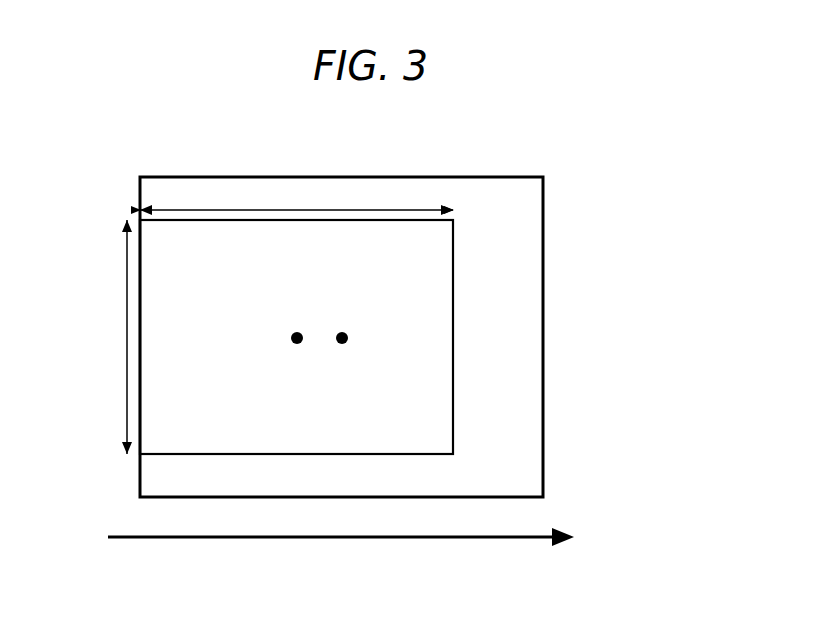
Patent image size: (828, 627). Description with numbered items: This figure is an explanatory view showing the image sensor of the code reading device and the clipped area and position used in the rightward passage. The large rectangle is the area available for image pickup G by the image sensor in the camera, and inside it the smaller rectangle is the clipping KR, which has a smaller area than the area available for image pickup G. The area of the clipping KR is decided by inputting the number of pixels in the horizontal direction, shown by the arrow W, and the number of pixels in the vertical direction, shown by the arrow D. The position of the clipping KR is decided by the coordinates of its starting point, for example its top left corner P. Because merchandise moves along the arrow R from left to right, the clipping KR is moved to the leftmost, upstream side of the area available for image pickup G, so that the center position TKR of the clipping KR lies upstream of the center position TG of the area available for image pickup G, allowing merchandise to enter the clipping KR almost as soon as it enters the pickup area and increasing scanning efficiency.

The area available for image pickup G is at (465, 177).
The clipping KR is at (313, 220).
The top left corner P is at (140, 220).
The arrow W is at (296, 199).
The arrow D is at (117, 337).
The center position of the clipping TKR is at (296, 333).
The center position of the area available for image pickup TG is at (344, 333).
The arrow R is at (326, 537).